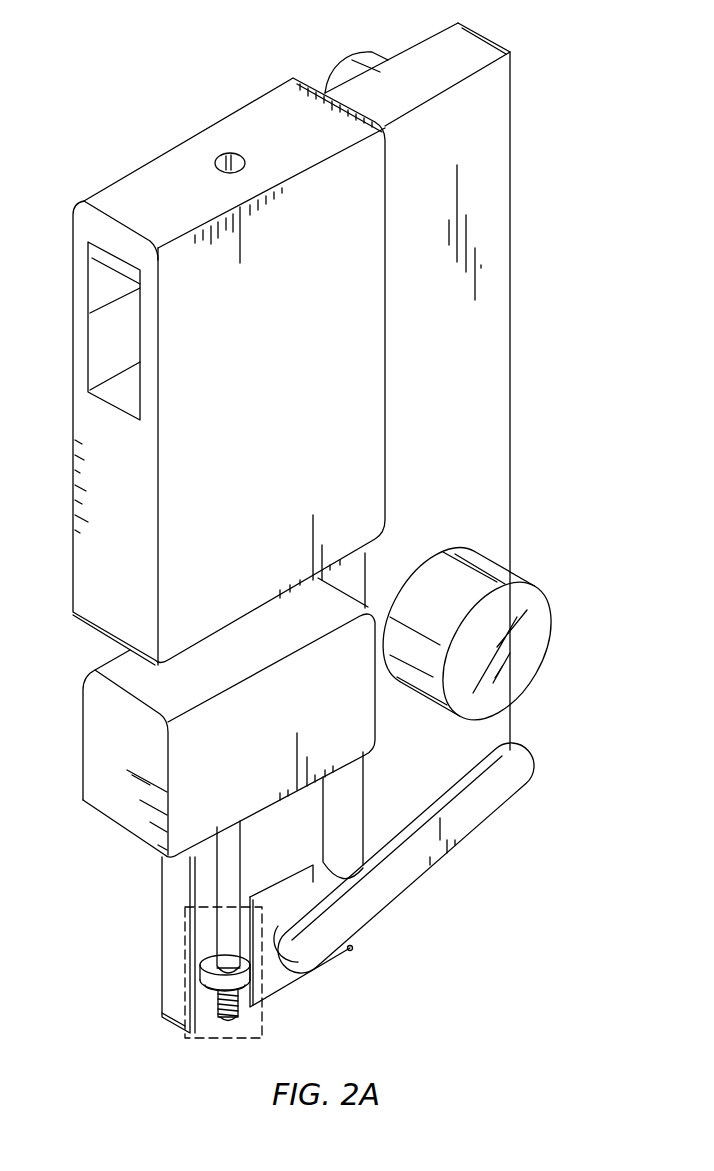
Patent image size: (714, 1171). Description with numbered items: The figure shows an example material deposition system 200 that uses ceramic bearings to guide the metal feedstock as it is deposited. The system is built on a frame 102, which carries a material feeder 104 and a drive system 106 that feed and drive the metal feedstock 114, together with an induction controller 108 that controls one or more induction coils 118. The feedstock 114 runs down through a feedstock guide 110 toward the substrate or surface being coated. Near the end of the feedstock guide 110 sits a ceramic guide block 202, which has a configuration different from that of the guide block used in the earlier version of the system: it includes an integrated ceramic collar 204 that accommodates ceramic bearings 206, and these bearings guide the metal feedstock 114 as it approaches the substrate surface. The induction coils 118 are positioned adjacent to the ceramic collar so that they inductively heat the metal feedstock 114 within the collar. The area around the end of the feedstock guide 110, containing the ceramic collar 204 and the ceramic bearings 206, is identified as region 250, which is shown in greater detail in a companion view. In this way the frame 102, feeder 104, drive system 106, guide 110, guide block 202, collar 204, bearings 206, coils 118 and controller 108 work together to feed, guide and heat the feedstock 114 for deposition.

The material deposition system 200 is at (140, 29).
The frame 102 is at (468, 128).
The material feeder 104 is at (330, 316).
The drive system 106 is at (284, 741).
The induction controller 108 is at (533, 630).
The feedstock guide 110 is at (232, 880).
The metal feedstock 114 is at (231, 1026).
The induction coils 118 is at (244, 1010).
The ceramic guide block 202 is at (305, 915).
The ceramic collar 204 is at (188, 954).
The ceramic bearings 206 is at (225, 985).
The region 250 is at (185, 920).